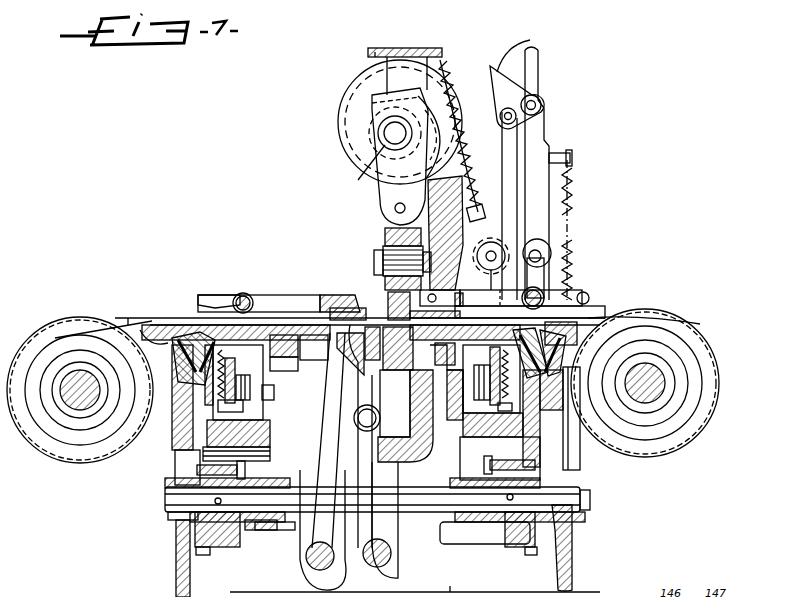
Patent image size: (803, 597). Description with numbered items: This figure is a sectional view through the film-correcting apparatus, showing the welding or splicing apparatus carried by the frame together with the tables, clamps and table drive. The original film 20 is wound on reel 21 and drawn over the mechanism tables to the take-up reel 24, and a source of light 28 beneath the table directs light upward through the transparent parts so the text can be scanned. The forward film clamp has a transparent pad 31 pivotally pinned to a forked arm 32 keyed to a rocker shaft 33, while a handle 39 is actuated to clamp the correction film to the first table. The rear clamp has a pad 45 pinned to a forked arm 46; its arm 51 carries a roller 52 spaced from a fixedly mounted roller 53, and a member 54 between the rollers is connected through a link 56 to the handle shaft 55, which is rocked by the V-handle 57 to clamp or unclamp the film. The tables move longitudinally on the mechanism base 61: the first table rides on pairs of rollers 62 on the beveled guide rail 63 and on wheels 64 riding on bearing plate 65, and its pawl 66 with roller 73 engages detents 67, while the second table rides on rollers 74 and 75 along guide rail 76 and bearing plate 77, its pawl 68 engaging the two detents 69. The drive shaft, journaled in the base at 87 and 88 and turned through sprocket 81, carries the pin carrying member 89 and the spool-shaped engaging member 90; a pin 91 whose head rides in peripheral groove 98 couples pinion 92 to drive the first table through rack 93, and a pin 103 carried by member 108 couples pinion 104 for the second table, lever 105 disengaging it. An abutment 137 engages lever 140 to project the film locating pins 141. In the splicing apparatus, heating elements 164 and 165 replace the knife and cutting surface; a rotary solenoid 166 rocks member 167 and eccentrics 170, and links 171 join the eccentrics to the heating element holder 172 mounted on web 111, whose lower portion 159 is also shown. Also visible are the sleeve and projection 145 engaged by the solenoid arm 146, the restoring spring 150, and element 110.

The film 20 is at (130, 318).
The reel 21 is at (70, 460).
The take-up reel 24 is at (660, 445).
The source of light 28 is at (366, 428).
The transparent pad 31 is at (334, 345).
The forked arm 32 is at (300, 300).
The rocker shaft 33 is at (252, 290).
The handle 39 is at (218, 296).
The pad 45 is at (440, 312).
The forked arm 46 is at (488, 300).
The arm 51 is at (544, 274).
The roller 52 is at (551, 252).
The roller 53 is at (494, 248).
The member 54 is at (512, 180).
The handle shaft 55 is at (541, 105).
The link 56 is at (504, 110).
The V-handle 57 is at (539, 54).
The mechanism base 61 is at (270, 428).
The rollers 62 is at (192, 368).
The guide rail 63 is at (176, 405).
The wheels 64 is at (290, 358).
The bearing plate 65 is at (287, 378).
The pawl 66 is at (230, 413).
The detents 67 is at (268, 398).
The pawl 68 is at (504, 415).
The detents 69 is at (490, 376).
The roller 73 is at (244, 374).
The rollers 74 is at (562, 350).
The rollers 75 is at (452, 364).
The guide rail 76 is at (548, 408).
The bearing plate 77 is at (446, 378).
The sprocket 81 is at (440, 505).
The journal 87 is at (176, 556).
The journal 88 is at (572, 540).
The pin carrying member 89 is at (222, 547).
The engaging member 90 is at (282, 482).
The pin 91 is at (245, 470).
The pinion 92 is at (204, 556).
The rack 93 is at (190, 455).
The peripheral groove 98 is at (258, 532).
The pin 103 is at (532, 464).
The pinion 104 is at (531, 556).
The lever 105 is at (512, 528).
The member 108 is at (518, 546).
The arm 110 is at (400, 550).
The web 111 is at (445, 235).
The abutment 137 is at (335, 440).
The lever 140 is at (341, 354).
The film locating pins 141 is at (361, 310).
The sleeve and projection 145 is at (374, 52).
The solenoid arm 146 is at (410, 50).
The spring 150 is at (452, 80).
The lower portion of the web 159 is at (405, 425).
The heating element 164 is at (388, 300).
The heating element 165 is at (389, 382).
The rotary solenoid 166 is at (378, 84).
The member 167 is at (430, 140).
The eccentrics 170 is at (358, 180).
The links 171 is at (380, 120).
The heating element holder 172 is at (386, 232).